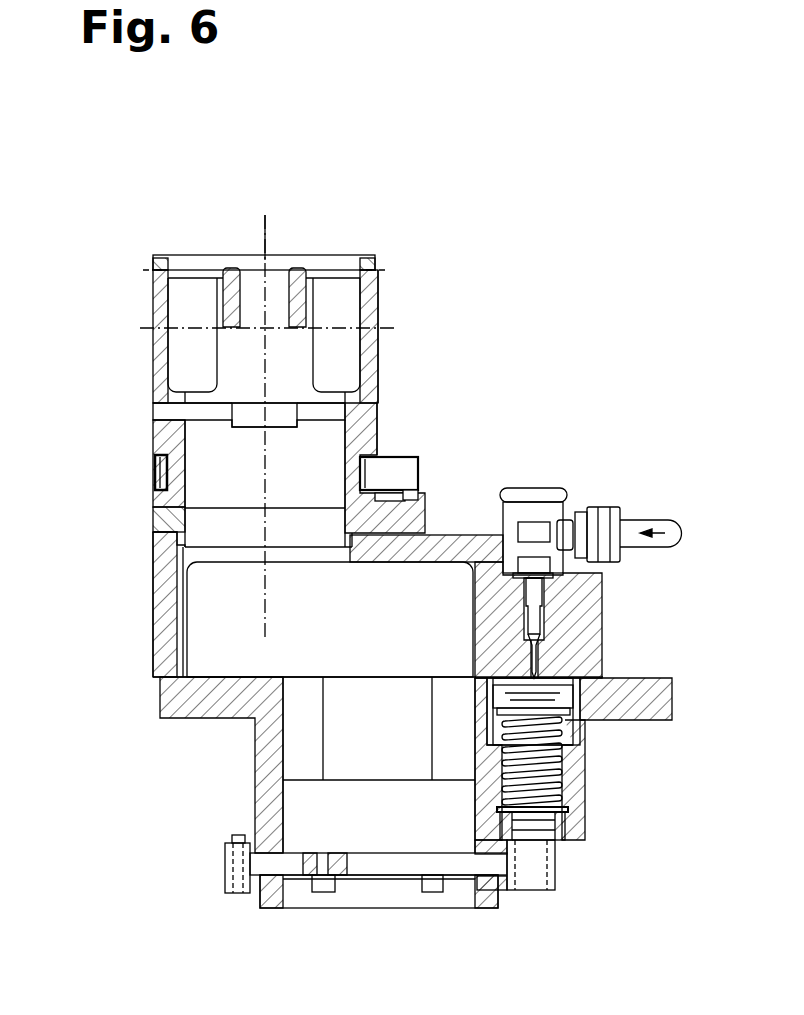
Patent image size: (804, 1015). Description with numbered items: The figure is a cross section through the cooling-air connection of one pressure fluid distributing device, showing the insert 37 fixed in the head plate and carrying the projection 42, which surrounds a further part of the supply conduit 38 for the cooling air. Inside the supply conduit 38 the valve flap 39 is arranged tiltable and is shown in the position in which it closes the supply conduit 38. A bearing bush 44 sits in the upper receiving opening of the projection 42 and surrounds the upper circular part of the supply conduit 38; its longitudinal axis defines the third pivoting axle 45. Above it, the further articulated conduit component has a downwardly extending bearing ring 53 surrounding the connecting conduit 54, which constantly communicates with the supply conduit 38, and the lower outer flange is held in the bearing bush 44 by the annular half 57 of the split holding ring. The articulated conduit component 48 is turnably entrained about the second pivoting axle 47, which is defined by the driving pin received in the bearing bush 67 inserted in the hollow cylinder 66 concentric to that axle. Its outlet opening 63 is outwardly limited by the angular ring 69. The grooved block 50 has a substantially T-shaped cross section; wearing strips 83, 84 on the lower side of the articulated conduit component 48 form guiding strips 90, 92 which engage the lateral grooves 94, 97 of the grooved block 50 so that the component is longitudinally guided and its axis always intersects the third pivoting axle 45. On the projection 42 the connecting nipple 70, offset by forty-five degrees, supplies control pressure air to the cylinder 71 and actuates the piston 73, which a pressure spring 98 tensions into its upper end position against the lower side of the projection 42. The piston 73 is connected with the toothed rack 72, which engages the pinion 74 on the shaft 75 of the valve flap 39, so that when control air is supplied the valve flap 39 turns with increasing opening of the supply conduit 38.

The insert 37 is at (673, 680).
The supply conduit 38 is at (200, 550).
The valve flap 39 is at (355, 878).
The projection 42 is at (602, 584).
The bearing bush 44 is at (153, 518).
The third pivoting axle 45 is at (267, 360).
The second pivoting axle 47 is at (270, 233).
The articulated conduit component 48 is at (395, 348).
The grooved block 50 is at (280, 414).
The bearing ring 53 is at (380, 431).
The connecting conduit 54 is at (278, 492).
The annular half 57 is at (158, 470).
The outlet opening 63 is at (187, 268).
The hollow cylinder 66 is at (307, 313).
The bearing bush 67 is at (303, 268).
The angular ring 69 is at (373, 253).
The connecting nipple 70 is at (600, 505).
The cylinder 71 is at (602, 640).
The toothed rack 72 is at (510, 825).
The piston 73 is at (505, 697).
The pinion 74 is at (547, 893).
The shaft 75 is at (300, 853).
The wearing strip 83 is at (202, 415).
The wearing strip 84 is at (327, 415).
The guiding strip 90 is at (214, 414).
The guiding strip 92 is at (315, 414).
The lateral groove 94 is at (207, 406).
The lateral groove 97 is at (322, 410).
The pressure spring 98 is at (553, 771).